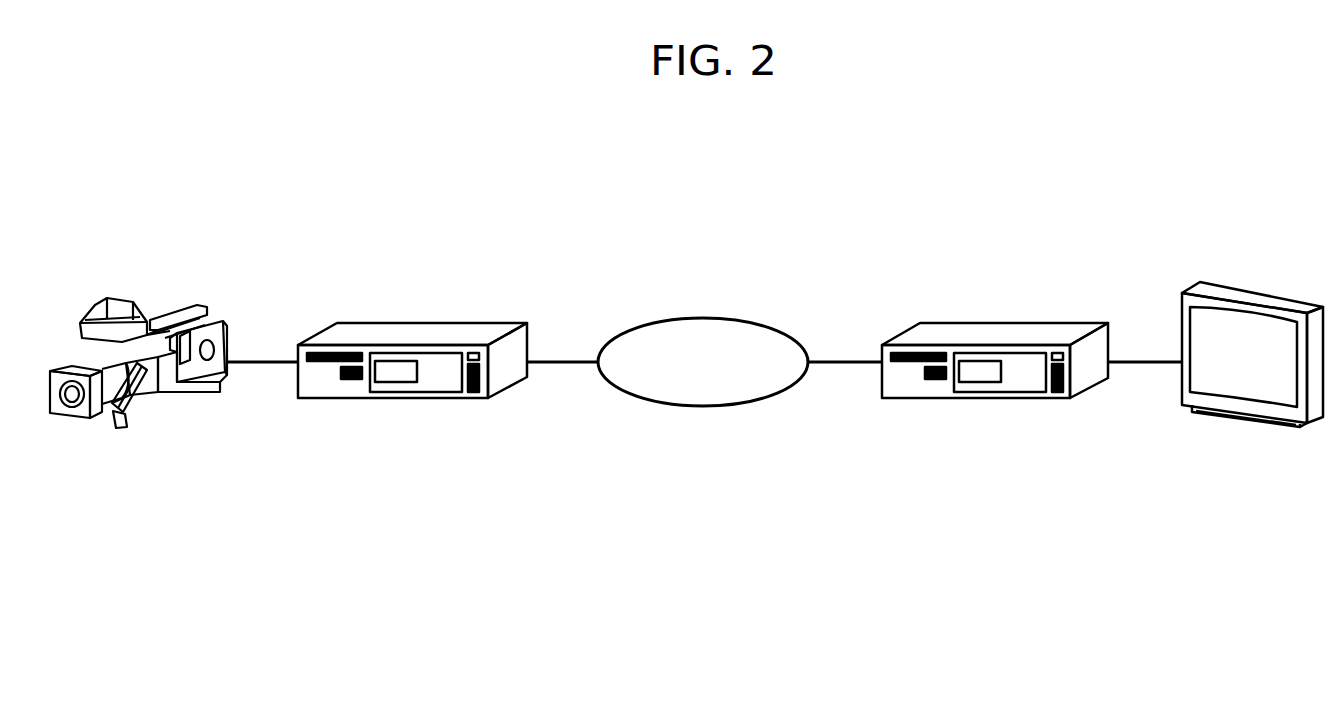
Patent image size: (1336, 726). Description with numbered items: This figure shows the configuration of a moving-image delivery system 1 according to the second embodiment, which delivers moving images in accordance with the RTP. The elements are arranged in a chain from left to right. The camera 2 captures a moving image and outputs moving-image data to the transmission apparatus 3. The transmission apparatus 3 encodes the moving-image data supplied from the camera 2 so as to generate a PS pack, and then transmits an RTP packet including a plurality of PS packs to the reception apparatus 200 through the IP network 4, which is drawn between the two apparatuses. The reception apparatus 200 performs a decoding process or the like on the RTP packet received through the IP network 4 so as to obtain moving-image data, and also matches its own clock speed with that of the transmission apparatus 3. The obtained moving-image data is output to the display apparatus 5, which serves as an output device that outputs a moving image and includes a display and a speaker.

The moving-image delivery system 1 is at (832, 272).
The camera 2 is at (210, 322).
The transmission apparatus 3 is at (432, 325).
The IP network 4 is at (704, 319).
The reception apparatus 200 is at (1004, 325).
The display apparatus 5 is at (1252, 292).